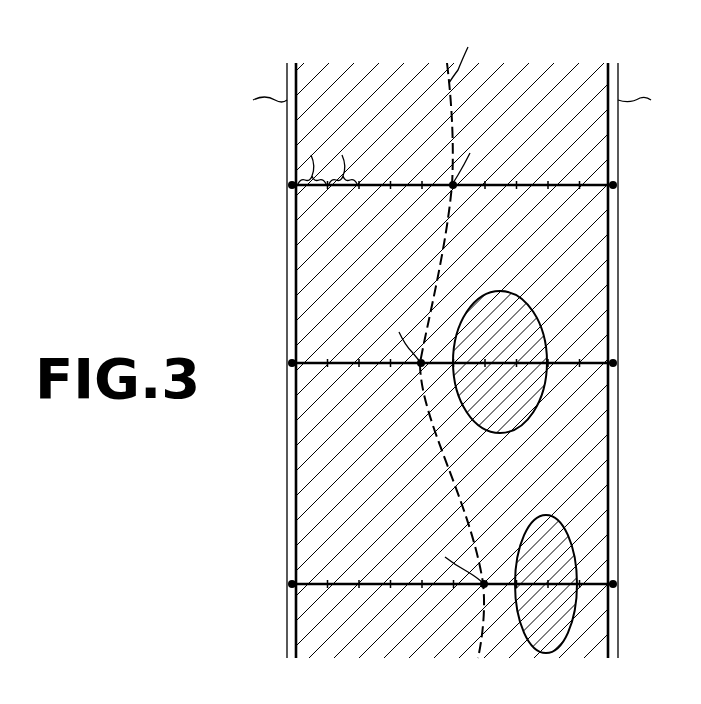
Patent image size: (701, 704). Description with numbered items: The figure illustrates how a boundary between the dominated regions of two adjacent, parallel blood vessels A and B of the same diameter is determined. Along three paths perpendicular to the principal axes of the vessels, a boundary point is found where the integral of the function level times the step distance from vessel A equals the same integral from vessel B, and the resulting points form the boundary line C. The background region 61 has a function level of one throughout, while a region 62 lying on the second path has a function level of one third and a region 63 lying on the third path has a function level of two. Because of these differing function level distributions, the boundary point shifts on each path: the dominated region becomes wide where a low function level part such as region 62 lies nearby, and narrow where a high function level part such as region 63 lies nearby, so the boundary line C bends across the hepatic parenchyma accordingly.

The region 61 is at (315, 290).
The region 62 is at (350, 360).
The region 63 is at (545, 515).